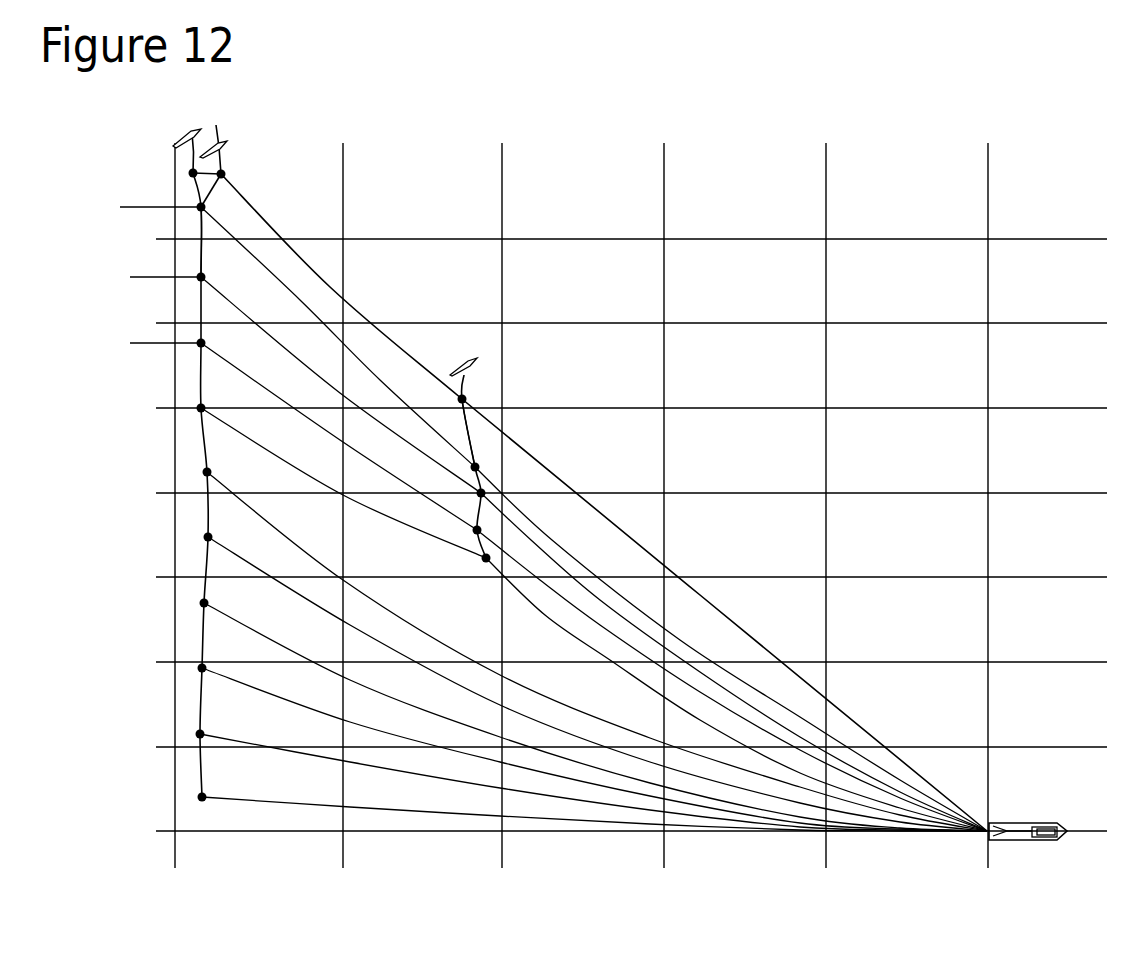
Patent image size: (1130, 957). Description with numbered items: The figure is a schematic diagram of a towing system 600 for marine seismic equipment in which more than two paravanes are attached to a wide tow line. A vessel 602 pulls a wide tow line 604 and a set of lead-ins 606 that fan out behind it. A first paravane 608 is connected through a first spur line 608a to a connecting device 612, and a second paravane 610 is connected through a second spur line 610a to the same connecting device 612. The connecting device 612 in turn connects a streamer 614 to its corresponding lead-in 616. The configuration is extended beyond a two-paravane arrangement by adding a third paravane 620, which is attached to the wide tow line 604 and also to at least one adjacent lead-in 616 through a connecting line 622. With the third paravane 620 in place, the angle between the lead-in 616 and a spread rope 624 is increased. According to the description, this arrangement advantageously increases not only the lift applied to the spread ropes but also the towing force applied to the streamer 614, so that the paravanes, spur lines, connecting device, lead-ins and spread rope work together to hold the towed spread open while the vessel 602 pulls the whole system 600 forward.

The towing system 600 is at (622, 122).
The vessel 602 is at (1035, 821).
The wide tow line 604 is at (560, 480).
The lead-ins 606 is at (597, 542).
The first paravane 608 is at (192, 130).
The first spur line 608a is at (196, 193).
The second paravane 610 is at (216, 125).
The second spur line 610a is at (215, 205).
The connecting device 612 is at (200, 208).
The streamer 614 is at (128, 209).
The lead-in 616 is at (300, 298).
The third paravane 620 is at (464, 358).
The connecting line 622 is at (471, 433).
The spread rope 624 is at (205, 262).